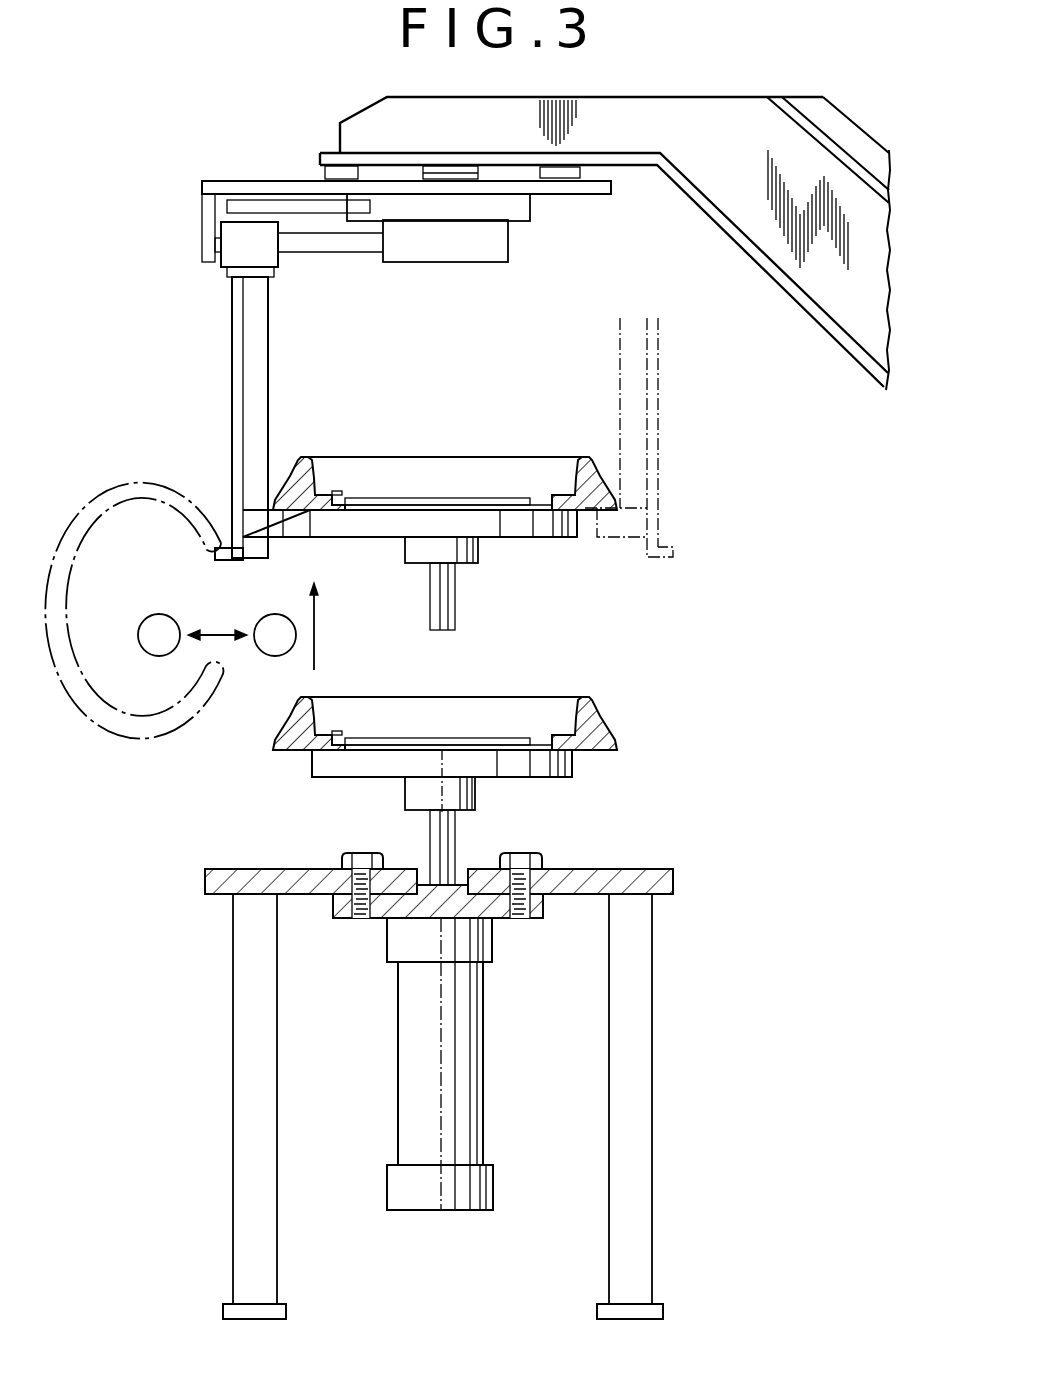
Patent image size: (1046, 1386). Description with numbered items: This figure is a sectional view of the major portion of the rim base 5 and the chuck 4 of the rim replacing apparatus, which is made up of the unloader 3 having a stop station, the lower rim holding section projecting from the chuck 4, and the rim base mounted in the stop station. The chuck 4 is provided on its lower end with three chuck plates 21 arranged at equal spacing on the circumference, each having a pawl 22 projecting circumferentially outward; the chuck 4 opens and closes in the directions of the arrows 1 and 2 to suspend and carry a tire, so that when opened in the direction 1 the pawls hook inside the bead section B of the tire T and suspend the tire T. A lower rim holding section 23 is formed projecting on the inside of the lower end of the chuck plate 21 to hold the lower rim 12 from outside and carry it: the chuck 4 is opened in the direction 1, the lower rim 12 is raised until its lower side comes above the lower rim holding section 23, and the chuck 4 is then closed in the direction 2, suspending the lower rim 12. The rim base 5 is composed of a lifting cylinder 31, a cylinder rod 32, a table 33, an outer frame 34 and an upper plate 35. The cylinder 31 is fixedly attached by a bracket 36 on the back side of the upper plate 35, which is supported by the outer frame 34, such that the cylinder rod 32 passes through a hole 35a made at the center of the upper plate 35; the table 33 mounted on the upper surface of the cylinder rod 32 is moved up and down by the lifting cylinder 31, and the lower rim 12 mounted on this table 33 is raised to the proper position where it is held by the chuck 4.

The unloader 3 is at (688, 97).
The chuck 4 is at (217, 323).
The chuck plate 21 is at (230, 388).
The pawl 22 is at (233, 560).
The lower rim holding section 23 is at (270, 537).
The lower rim 12 is at (373, 455).
The rim base 5 is at (228, 858).
The lifting cylinder 31 is at (483, 1063).
The cylinder rod 32 is at (455, 828).
The table 33 is at (575, 768).
The outer frame 34 is at (640, 1062).
The upper plate 35 is at (650, 868).
The hole 35a is at (467, 868).
The bracket 36 is at (540, 912).
The bead section B is at (210, 537).
The tire T is at (67, 612).
The opening direction 1 is at (159, 635).
The closing direction 2 is at (275, 635).